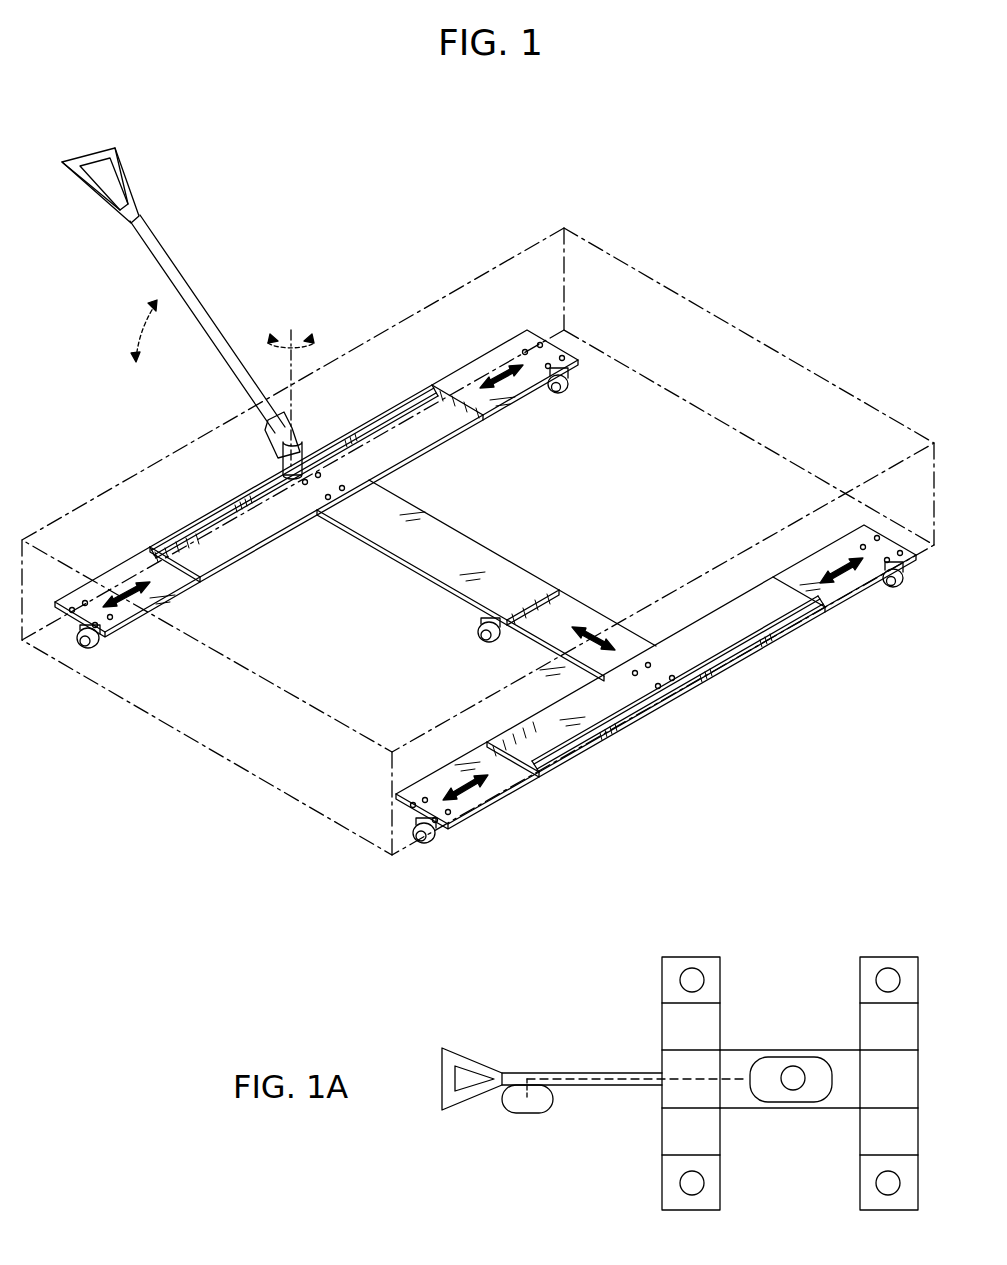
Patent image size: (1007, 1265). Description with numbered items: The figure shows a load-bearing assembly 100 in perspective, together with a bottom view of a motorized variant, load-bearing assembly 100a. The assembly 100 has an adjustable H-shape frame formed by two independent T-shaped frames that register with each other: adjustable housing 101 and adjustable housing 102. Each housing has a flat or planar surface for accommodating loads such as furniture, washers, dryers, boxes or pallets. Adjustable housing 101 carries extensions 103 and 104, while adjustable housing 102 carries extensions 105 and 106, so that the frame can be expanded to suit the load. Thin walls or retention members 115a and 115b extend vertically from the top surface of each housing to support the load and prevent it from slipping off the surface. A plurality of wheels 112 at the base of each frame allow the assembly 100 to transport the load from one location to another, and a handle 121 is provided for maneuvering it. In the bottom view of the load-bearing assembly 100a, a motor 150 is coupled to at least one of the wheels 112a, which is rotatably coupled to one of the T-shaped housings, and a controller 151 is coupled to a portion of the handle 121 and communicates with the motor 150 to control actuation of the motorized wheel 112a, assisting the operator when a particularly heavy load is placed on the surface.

In FIG. 1, the load-bearing assembly 100 is at (512, 182).
In FIG. 1A, the load-bearing assembly 100a is at (640, 1029).
In FIG. 1, the adjustable housing 101 is at (341, 552).
In FIG. 1, the adjustable housing 102 is at (631, 596).
In FIG. 1, the extension 103 is at (98, 587).
In FIG. 1, the extension 104 is at (487, 358).
In FIG. 1, the extension 105 is at (493, 807).
In FIG. 1, the extension 106 is at (863, 594).
In FIG. 1, the wheels 112 is at (486, 636).
In FIG. 1A, the wheels 112 is at (705, 980).
In FIG. 1A, the wheel 112a is at (782, 1079).
In FIG. 1, the retention member 115a is at (195, 528).
In FIG. 1, the retention member 115b is at (613, 732).
In FIG. 1, the handle 121 is at (100, 197).
In FIG. 1A, the motor 150 is at (822, 1102).
In FIG. 1A, the controller 151 is at (527, 1114).